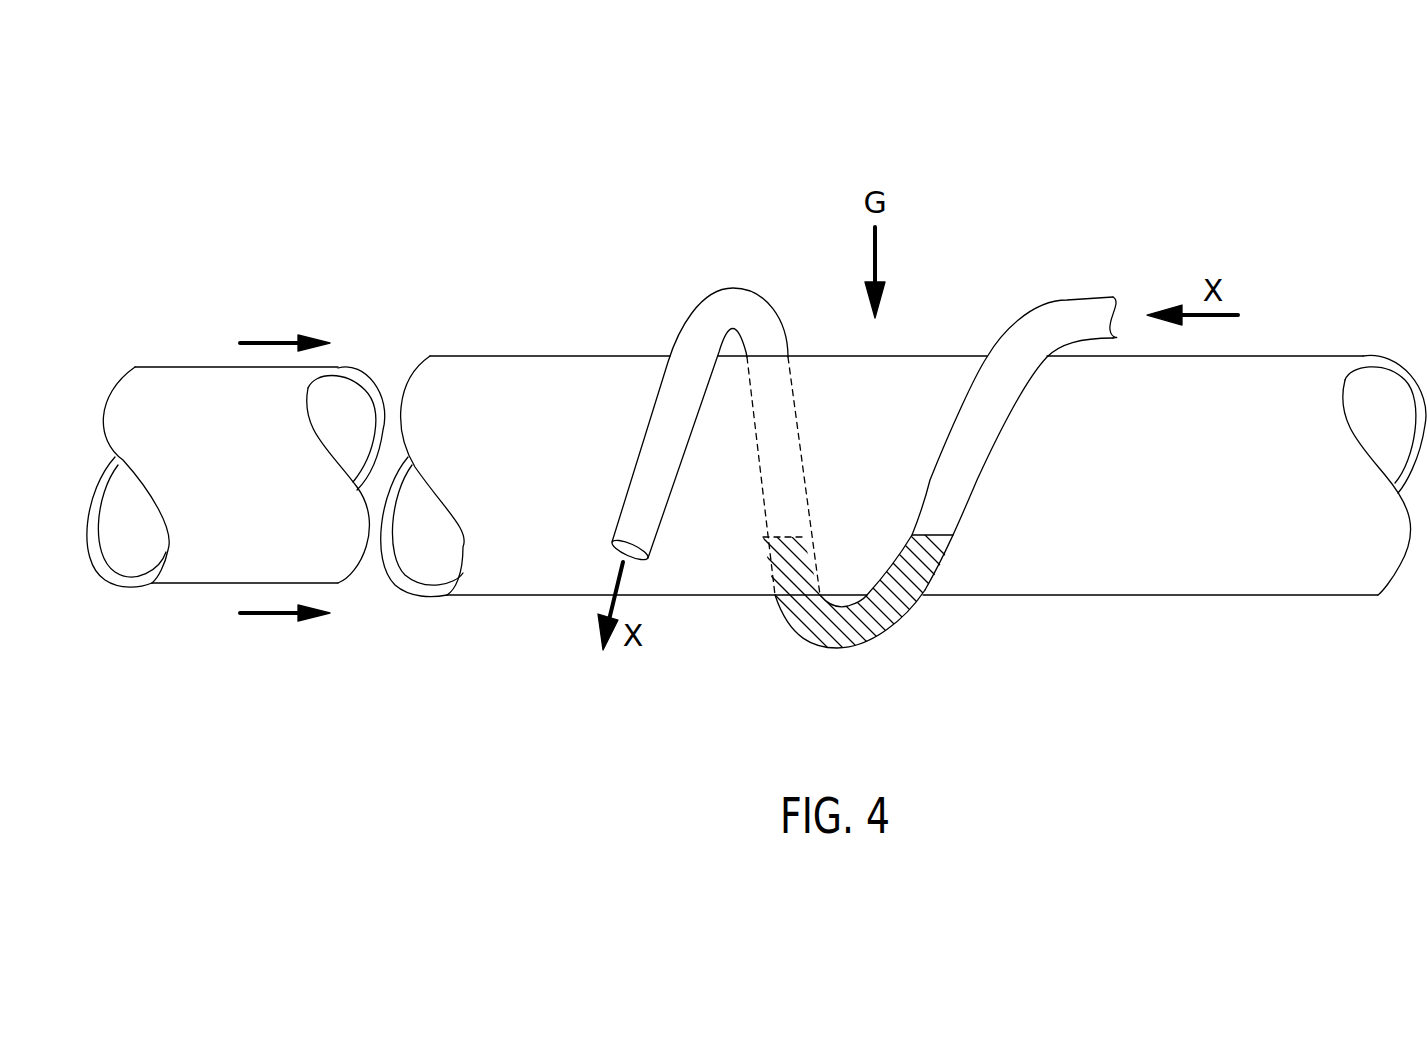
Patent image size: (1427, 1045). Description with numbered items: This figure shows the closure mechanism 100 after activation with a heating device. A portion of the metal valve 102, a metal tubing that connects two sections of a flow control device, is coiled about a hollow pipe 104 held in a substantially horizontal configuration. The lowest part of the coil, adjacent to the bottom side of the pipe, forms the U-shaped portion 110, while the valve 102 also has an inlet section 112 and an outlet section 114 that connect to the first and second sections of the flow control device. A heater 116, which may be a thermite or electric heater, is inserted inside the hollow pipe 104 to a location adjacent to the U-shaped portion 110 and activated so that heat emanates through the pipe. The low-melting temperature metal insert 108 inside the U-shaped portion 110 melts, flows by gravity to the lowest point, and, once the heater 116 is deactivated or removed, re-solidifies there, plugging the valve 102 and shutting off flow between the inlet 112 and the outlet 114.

The closure mechanism 100 is at (384, 164).
The metal valve 102 is at (1020, 337).
The hollow pipe 104 is at (1173, 580).
The low-melting temperature metal insert 108 is at (863, 630).
The U-shaped portion 110 is at (754, 626).
The inlet section 112 is at (1093, 307).
The outlet section 114 is at (632, 515).
The heater 116 is at (222, 572).